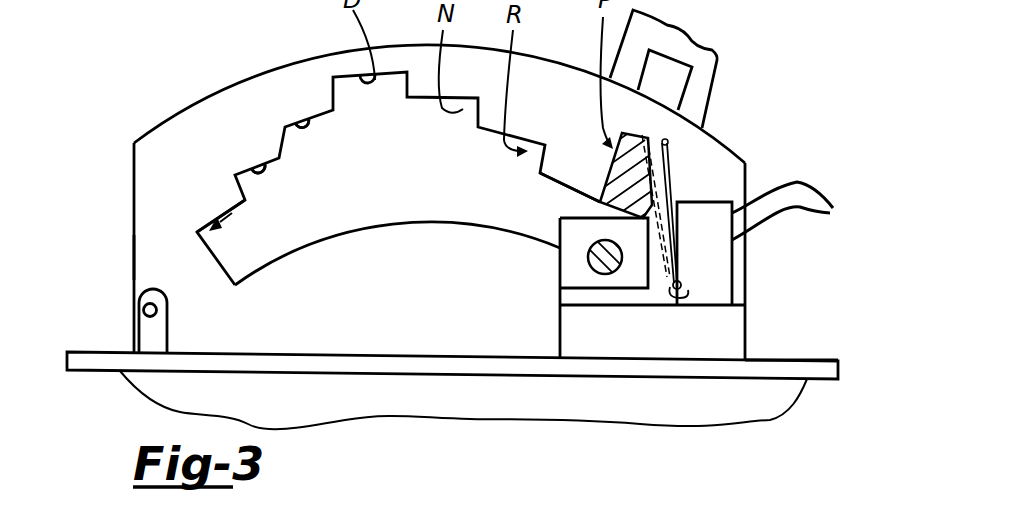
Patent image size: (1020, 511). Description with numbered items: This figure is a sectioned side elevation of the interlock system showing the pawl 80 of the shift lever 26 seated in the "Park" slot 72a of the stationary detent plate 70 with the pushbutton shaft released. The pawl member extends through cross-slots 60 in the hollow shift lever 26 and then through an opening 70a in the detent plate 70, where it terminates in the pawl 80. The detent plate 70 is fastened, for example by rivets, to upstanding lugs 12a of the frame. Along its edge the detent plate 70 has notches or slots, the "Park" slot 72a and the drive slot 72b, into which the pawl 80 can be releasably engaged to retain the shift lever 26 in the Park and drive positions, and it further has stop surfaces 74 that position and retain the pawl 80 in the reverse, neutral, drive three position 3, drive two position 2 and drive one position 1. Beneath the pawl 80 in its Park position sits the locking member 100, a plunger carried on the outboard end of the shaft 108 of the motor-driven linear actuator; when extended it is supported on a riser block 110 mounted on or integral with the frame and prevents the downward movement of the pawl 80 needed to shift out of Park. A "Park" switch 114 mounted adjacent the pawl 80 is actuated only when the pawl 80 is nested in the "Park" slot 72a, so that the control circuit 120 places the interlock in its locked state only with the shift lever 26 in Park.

The detent plate 70 is at (140, 172).
The opening 70a is at (134, 258).
The upstanding lugs 12a is at (147, 325).
The stop surfaces 74 is at (252, 189).
The "Park" slot 72a is at (599, 169).
The drive slot 72b is at (359, 99).
The drive one position 1 is at (230, 213).
The drive two position 2 is at (252, 168).
The drive three position 3 is at (306, 115).
The pawl 80 is at (607, 208).
The locking member 100 is at (570, 268).
The shaft 108 is at (600, 268).
The riser block 110 is at (737, 328).
The "Park" switch 114 is at (723, 213).
The control circuit 120 is at (795, 213).
The shift lever 26 is at (717, 60).
The cross-slots 60 is at (680, 83).